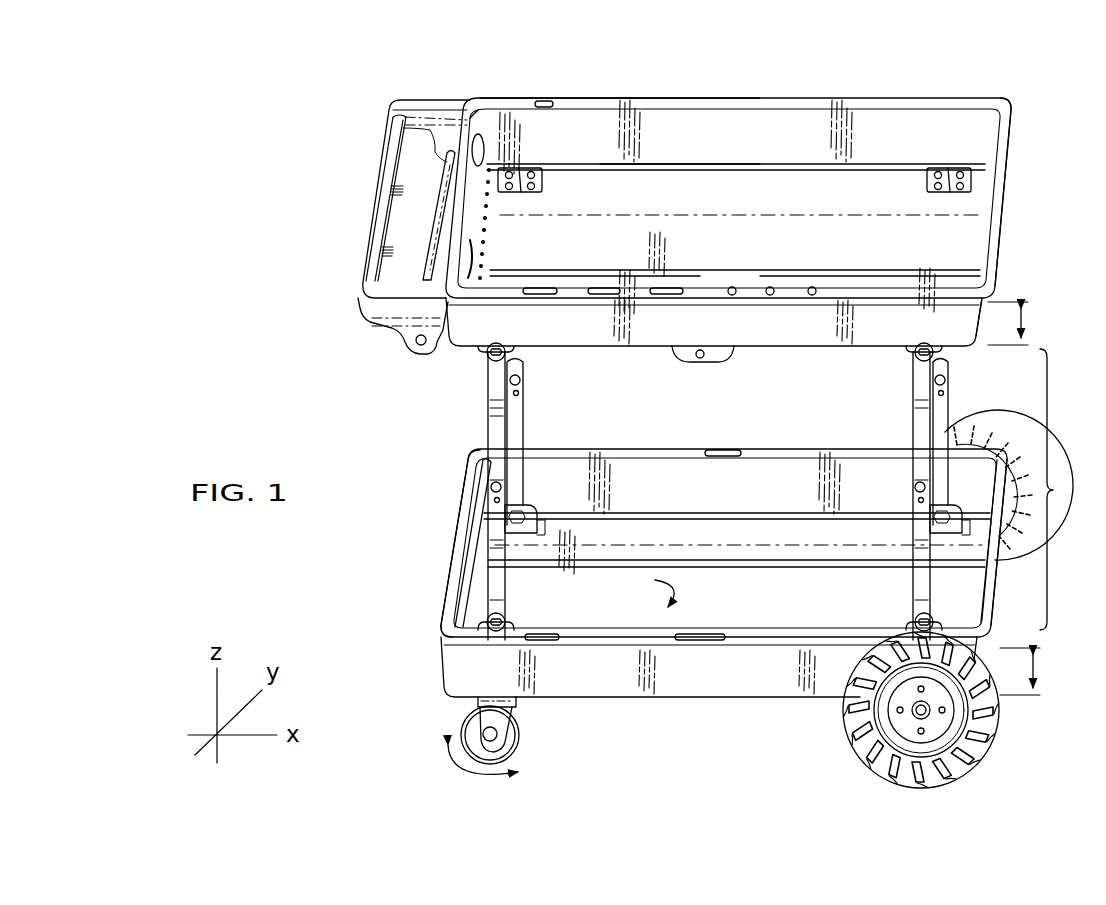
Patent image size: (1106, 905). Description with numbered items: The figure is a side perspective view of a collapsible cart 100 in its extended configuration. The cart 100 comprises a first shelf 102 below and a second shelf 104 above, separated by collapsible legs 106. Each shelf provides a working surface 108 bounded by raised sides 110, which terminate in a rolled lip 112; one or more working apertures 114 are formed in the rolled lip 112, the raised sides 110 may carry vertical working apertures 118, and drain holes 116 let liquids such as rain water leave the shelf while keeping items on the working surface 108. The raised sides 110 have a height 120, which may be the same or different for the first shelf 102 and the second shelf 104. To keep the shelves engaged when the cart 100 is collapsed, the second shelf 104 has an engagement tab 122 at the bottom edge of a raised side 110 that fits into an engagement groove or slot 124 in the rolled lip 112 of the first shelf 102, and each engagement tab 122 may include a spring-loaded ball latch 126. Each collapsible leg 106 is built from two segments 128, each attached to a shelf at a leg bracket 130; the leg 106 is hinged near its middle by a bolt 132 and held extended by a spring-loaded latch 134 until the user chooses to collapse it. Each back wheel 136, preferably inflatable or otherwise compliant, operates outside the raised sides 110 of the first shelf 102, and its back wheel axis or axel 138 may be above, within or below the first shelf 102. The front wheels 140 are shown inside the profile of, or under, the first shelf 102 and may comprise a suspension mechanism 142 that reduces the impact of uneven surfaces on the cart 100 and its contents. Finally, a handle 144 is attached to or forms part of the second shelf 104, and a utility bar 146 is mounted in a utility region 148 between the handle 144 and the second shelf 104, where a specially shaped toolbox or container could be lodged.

The collapsible cart 100 is at (330, 85).
The first shelf 102 is at (640, 640).
The second shelf 104 is at (787, 200).
The collapsible legs 106 is at (1069, 489).
The working surface 108 is at (683, 208).
The raised sides 110 is at (895, 325).
The rolled lip 112 is at (860, 100).
The working apertures 114 is at (600, 98).
The drain holes 116 is at (483, 250).
The vertical working apertures 118 is at (483, 137).
The height 120 is at (1032, 498).
The engagement tab 122 is at (722, 358).
The engagement groove or slot 124 is at (735, 462).
The spring-loaded ball latch 126 is at (690, 358).
The segments 128 is at (516, 416).
The leg bracket 130 is at (490, 358).
The bolt 132 is at (488, 486).
The spring-loaded latch 134 is at (492, 502).
The back wheel 136 is at (870, 765).
The back wheel axis or axel 138 is at (925, 715).
The front wheels 140 is at (455, 727).
The suspension mechanism 142 is at (490, 707).
The handle 144 is at (380, 178).
The utility bar 146 is at (432, 260).
The utility region 148 is at (412, 366).